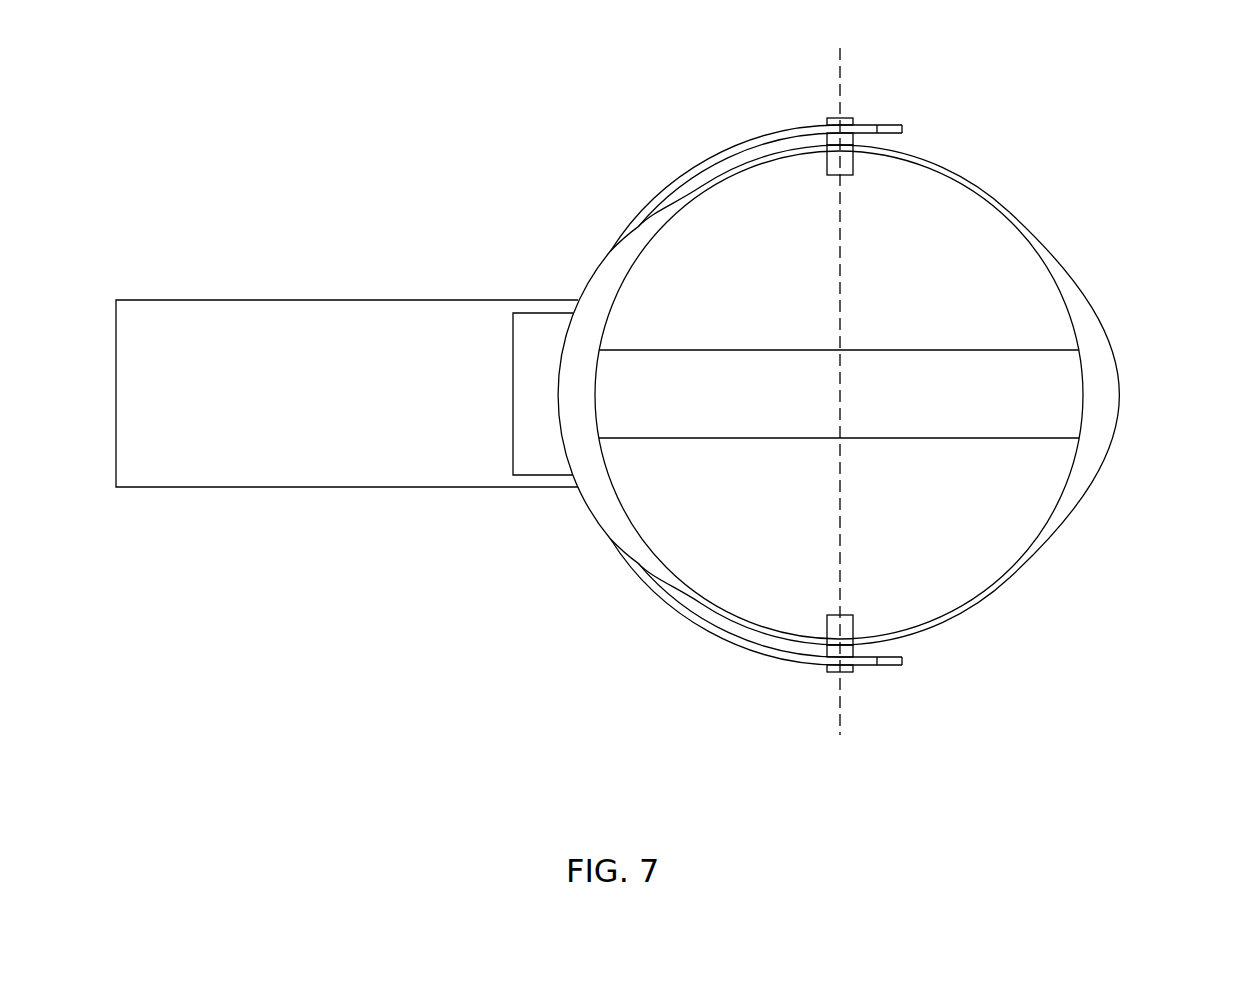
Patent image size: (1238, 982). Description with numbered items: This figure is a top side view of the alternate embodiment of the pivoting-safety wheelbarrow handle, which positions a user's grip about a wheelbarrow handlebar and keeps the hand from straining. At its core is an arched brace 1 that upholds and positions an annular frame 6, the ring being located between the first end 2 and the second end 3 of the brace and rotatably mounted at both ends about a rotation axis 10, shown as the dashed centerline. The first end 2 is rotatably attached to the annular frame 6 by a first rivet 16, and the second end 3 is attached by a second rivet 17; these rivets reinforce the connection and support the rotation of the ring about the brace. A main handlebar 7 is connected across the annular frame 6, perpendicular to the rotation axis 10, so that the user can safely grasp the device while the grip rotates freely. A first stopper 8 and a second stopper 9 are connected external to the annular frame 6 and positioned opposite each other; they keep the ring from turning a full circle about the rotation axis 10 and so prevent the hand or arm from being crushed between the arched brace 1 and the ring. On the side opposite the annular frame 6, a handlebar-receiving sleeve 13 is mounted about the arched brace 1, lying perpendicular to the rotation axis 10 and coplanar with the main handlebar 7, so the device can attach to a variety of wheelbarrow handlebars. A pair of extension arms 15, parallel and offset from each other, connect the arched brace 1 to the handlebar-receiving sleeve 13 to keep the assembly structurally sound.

The arched brace 1 is at (618, 651).
The first end 2 is at (893, 665).
The second end 3 is at (893, 126).
The annular frame 6 is at (1022, 563).
The main handlebar 7 is at (936, 428).
The first stopper 8 is at (582, 398).
The second stopper 9 is at (1102, 398).
The rotation axis 10 is at (845, 236).
The handlebar-receiving sleeve 13 is at (318, 303).
The pair of extension arms 15 is at (522, 306).
The first rivet 16 is at (826, 631).
The second rivet 17 is at (826, 162).